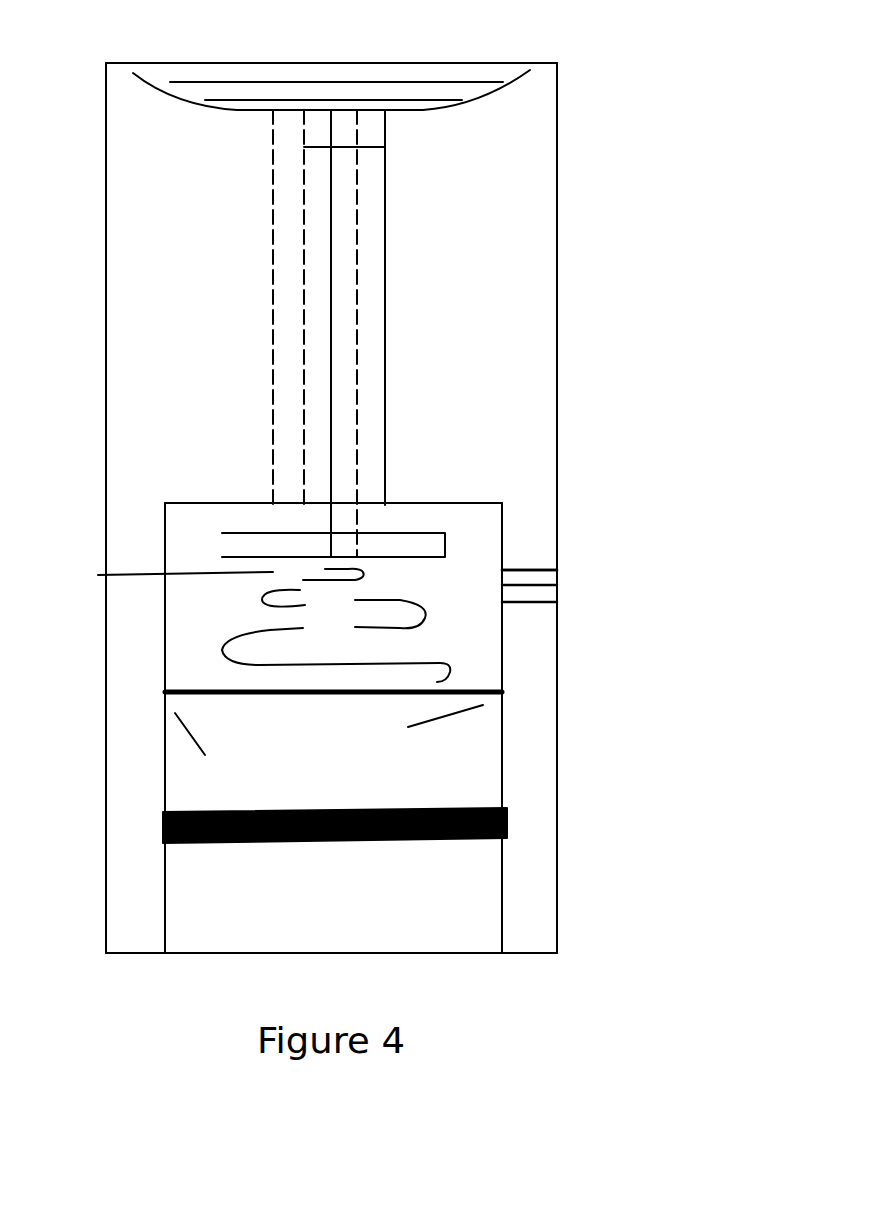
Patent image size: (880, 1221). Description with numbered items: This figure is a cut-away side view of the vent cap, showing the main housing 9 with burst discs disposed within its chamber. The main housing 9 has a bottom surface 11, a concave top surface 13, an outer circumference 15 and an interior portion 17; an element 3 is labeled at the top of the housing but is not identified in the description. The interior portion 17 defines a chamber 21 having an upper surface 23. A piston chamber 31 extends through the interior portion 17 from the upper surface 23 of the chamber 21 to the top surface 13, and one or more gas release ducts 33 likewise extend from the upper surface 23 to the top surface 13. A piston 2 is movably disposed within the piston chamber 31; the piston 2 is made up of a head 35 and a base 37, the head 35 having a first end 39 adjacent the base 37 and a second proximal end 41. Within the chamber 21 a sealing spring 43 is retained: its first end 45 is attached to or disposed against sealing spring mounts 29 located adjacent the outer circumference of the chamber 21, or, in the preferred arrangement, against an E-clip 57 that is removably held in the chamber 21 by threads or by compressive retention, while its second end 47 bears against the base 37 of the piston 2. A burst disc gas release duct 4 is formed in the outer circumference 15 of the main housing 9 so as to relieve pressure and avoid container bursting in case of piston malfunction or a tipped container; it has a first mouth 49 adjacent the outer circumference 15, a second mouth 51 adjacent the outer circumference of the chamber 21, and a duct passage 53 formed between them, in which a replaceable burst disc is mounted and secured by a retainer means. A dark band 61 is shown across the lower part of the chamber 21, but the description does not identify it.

The piston 2 is at (318, 330).
The top cover 3 is at (365, 55).
The burst disc gas release duct 4 is at (542, 640).
The main housing 9 is at (575, 392).
The bottom surface 11 is at (123, 932).
The concave top surface 13 is at (157, 93).
The outer circumference 15 is at (573, 868).
The interior portion 17 is at (533, 223).
The chamber 21 is at (333, 918).
The upper surface 23 is at (148, 492).
The sealing spring mounts 29 is at (355, 740).
The piston chamber 31 is at (280, 177).
The gas release ducts 33 is at (383, 227).
The head 35 is at (497, 862).
The base 37 is at (375, 535).
The first end 39 is at (272, 503).
The second proximal end 41 is at (385, 147).
The sealing spring 43 is at (336, 636).
The first end 45 is at (178, 680).
The second end 47 is at (163, 570).
The first mouth 49 is at (573, 572).
The second mouth 51 is at (483, 585).
The duct passage 53 is at (525, 563).
The E-clip 57 is at (352, 705).
The seal band 61 is at (522, 805).